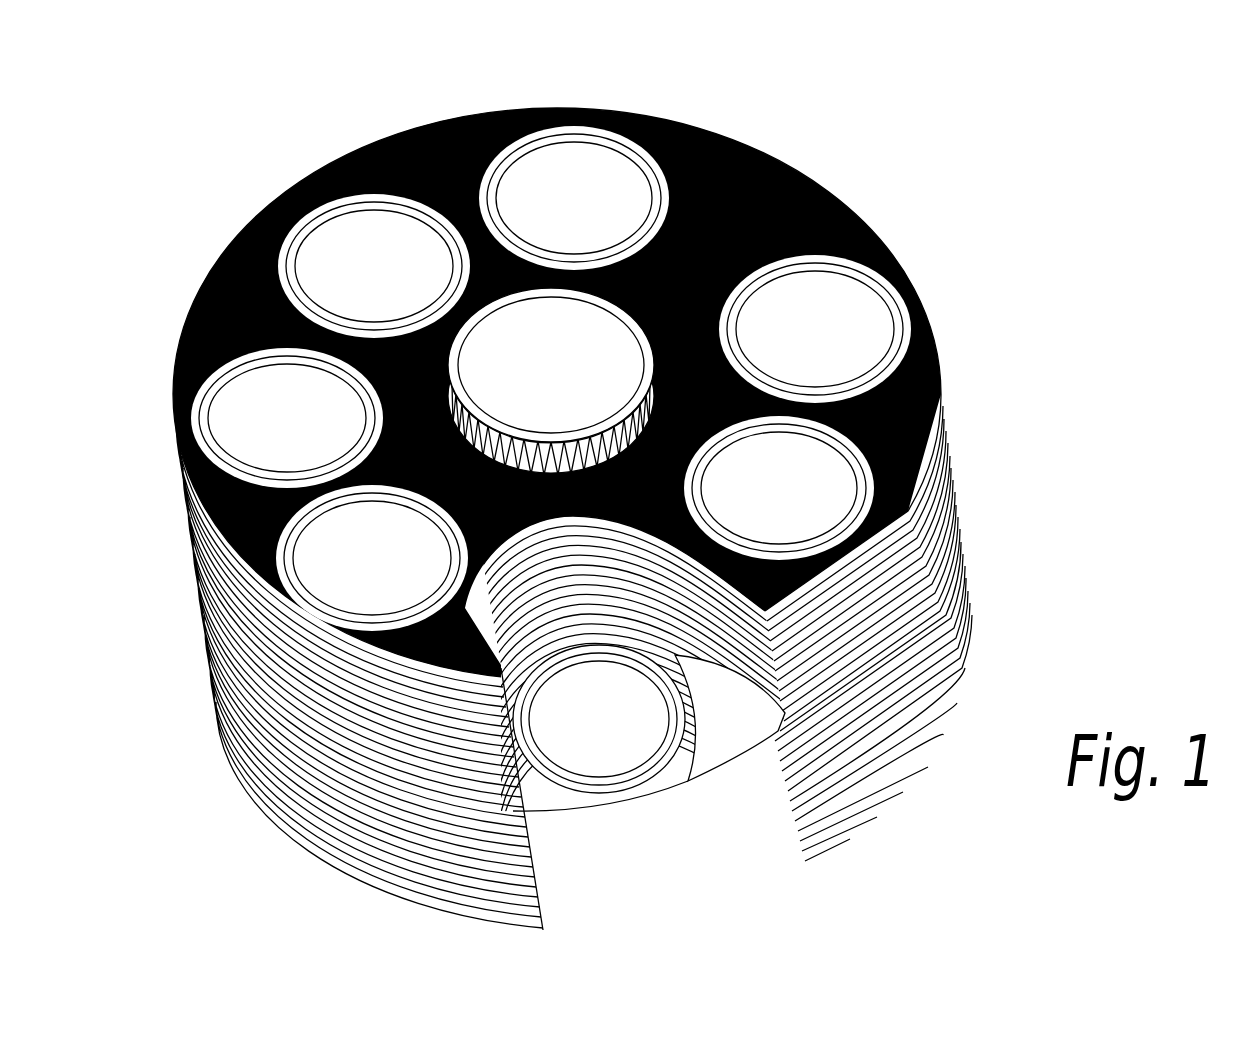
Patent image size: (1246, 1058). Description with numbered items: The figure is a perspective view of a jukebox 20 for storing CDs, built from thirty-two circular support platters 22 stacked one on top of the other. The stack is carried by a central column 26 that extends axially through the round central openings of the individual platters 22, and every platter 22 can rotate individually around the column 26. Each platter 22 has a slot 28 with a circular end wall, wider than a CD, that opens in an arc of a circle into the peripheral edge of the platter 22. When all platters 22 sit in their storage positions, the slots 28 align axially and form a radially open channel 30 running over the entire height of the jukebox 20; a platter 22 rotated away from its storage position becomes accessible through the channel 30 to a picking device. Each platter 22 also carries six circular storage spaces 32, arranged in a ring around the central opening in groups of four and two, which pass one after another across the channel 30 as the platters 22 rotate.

The jukebox 20 is at (602, 485).
The circular support platter 22 is at (925, 345).
The central column 26 is at (550, 310).
The slot 28 is at (774, 832).
The channel 30 is at (607, 861).
The circular storage space 32 is at (848, 288).